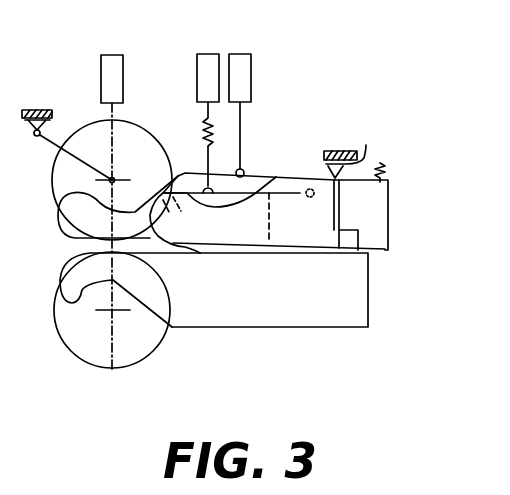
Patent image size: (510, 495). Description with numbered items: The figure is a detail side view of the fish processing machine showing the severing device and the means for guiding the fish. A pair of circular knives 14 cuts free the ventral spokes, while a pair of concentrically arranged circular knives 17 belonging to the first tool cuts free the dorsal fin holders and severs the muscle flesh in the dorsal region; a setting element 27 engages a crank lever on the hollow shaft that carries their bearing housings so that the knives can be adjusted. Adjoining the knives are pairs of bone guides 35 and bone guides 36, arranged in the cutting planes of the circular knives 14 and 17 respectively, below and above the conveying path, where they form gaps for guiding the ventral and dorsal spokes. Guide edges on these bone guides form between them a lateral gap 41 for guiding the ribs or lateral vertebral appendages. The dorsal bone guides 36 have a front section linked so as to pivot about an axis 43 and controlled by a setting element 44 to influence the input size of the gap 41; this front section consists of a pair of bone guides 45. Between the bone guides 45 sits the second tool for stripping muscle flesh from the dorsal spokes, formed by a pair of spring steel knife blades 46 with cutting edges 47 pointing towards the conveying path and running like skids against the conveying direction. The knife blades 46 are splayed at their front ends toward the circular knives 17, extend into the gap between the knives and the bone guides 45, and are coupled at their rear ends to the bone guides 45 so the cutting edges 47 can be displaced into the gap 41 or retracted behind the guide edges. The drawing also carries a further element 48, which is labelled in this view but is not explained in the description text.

The circular knives 14 is at (145, 347).
The circular knives 17 is at (134, 135).
The setting element 27 is at (108, 80).
The bone guides 35 is at (295, 318).
The bone guides 36 is at (378, 195).
The lateral gap 41 is at (282, 252).
The axis 43 is at (366, 150).
The setting element 44 is at (251, 72).
The bone guides 45 is at (287, 186).
The knife blades 46 is at (230, 224).
The cutting edges 47 is at (193, 253).
The spring actuator / movement direction 48 is at (203, 63).